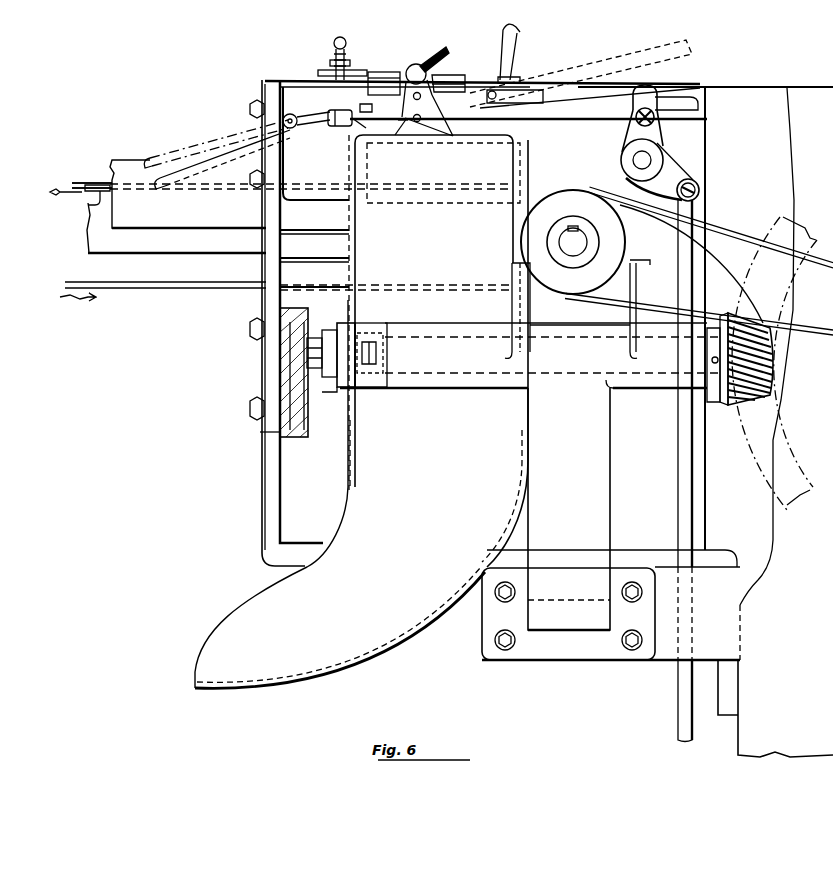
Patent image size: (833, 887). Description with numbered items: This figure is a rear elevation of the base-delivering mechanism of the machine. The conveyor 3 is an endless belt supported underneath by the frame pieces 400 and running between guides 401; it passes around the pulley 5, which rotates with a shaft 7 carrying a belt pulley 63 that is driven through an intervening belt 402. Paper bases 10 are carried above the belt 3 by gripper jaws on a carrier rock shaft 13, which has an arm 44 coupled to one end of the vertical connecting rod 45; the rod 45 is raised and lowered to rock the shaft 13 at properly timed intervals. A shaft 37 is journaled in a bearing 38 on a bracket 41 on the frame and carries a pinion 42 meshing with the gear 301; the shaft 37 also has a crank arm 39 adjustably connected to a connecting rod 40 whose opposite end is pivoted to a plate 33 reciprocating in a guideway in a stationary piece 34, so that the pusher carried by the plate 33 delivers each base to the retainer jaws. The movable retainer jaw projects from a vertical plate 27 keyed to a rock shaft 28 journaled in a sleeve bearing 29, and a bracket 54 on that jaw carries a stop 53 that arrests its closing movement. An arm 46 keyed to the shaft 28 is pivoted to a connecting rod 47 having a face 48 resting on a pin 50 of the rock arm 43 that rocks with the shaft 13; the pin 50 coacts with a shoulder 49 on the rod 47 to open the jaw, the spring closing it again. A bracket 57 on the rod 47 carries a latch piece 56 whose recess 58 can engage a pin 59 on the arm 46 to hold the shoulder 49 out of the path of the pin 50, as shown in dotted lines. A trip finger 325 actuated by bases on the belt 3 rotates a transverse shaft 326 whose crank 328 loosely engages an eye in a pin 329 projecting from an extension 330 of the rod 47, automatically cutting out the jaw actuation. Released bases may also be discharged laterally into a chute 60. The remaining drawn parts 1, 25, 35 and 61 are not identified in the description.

The machine frame 1 is at (657, 422).
The conveyor belt 3 is at (90, 181).
The pulley 5 is at (514, 250).
The shaft 7 is at (590, 246).
The paper base 10 is at (112, 162).
The carrier rock shaft 13 is at (634, 166).
The link 25 is at (409, 125).
The vertical plate 27 is at (394, 70).
The retainer rock shaft 28 is at (420, 64).
The sleeve bearing 29 is at (456, 75).
The plate 33 is at (303, 398).
The stationary piece 34 is at (290, 440).
The bracket plate 35 is at (283, 220).
The shaft 37 is at (447, 336).
The bearing 38 is at (497, 366).
The crank arm 39 is at (345, 330).
The connecting rod 40 is at (345, 395).
The bracket 41 is at (569, 509).
The pinion 42 is at (745, 404).
The rock arm 43 is at (650, 90).
The arm 44 is at (678, 172).
The vertical connecting rod 45 is at (680, 484).
The arm 46 is at (398, 138).
The connecting rod 47 is at (562, 124).
The face 48 is at (692, 97).
The thrust shoulder 49 is at (640, 48).
The pin 50 is at (656, 117).
The stop 53 is at (333, 45).
The bracket 54 is at (318, 73).
The latch piece 56 is at (521, 33).
The bracket 57 is at (520, 88).
The recess 58 is at (500, 28).
The pin 59 is at (448, 138).
The chute 60 is at (361, 414).
The bearing bracket 61 is at (640, 270).
The belt pulley 63 is at (522, 234).
The gear 301 is at (795, 282).
The trip finger 325 is at (240, 146).
The transverse shaft 326 is at (291, 129).
The crank 328 is at (322, 112).
The pin 329 is at (337, 129).
The extension 330 is at (357, 118).
The frame pieces 400 is at (90, 205).
The guides 401 is at (174, 222).
The belt 402 is at (738, 238).